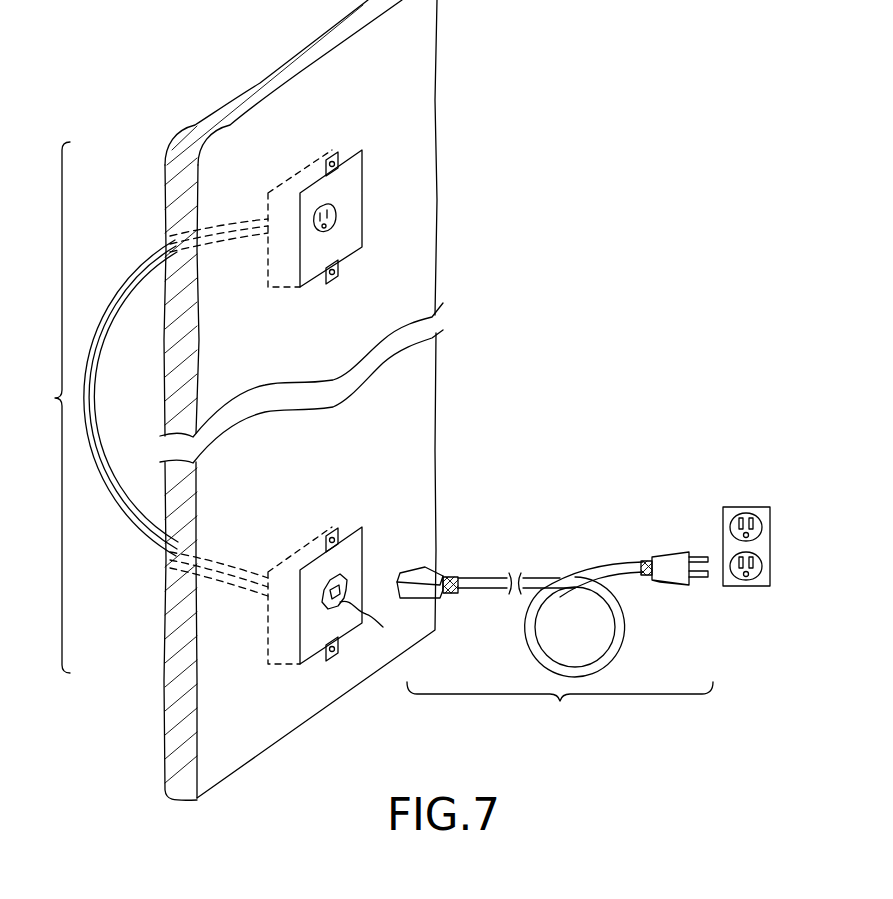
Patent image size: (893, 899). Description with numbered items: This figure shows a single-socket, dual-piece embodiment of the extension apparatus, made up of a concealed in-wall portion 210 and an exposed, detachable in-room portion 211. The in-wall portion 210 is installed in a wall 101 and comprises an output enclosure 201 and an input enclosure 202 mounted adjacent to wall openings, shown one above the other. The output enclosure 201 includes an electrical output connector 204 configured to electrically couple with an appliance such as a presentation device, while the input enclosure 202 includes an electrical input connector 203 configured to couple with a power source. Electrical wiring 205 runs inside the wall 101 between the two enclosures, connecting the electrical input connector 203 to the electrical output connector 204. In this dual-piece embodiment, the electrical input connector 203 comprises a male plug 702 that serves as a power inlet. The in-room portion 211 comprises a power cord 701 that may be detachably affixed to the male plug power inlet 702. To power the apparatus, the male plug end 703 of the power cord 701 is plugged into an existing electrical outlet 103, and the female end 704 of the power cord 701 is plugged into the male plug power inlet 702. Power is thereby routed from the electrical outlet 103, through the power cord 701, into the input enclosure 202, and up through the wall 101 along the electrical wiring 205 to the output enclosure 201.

The wall 101 is at (437, 71).
The electrical outlet 103 is at (766, 540).
The output enclosure 201 is at (344, 221).
The input enclosure 202 is at (319, 590).
The electrical input connector 203 is at (330, 603).
The electrical output connector 204 is at (345, 214).
The electrical wiring 205 is at (116, 297).
The in-wall portion 210 is at (42, 407).
The in-room portion 211 is at (555, 613).
The power cord 701 is at (628, 623).
The male plug 702 is at (378, 622).
The male plug end 703 is at (673, 555).
The female end 704 is at (433, 571).